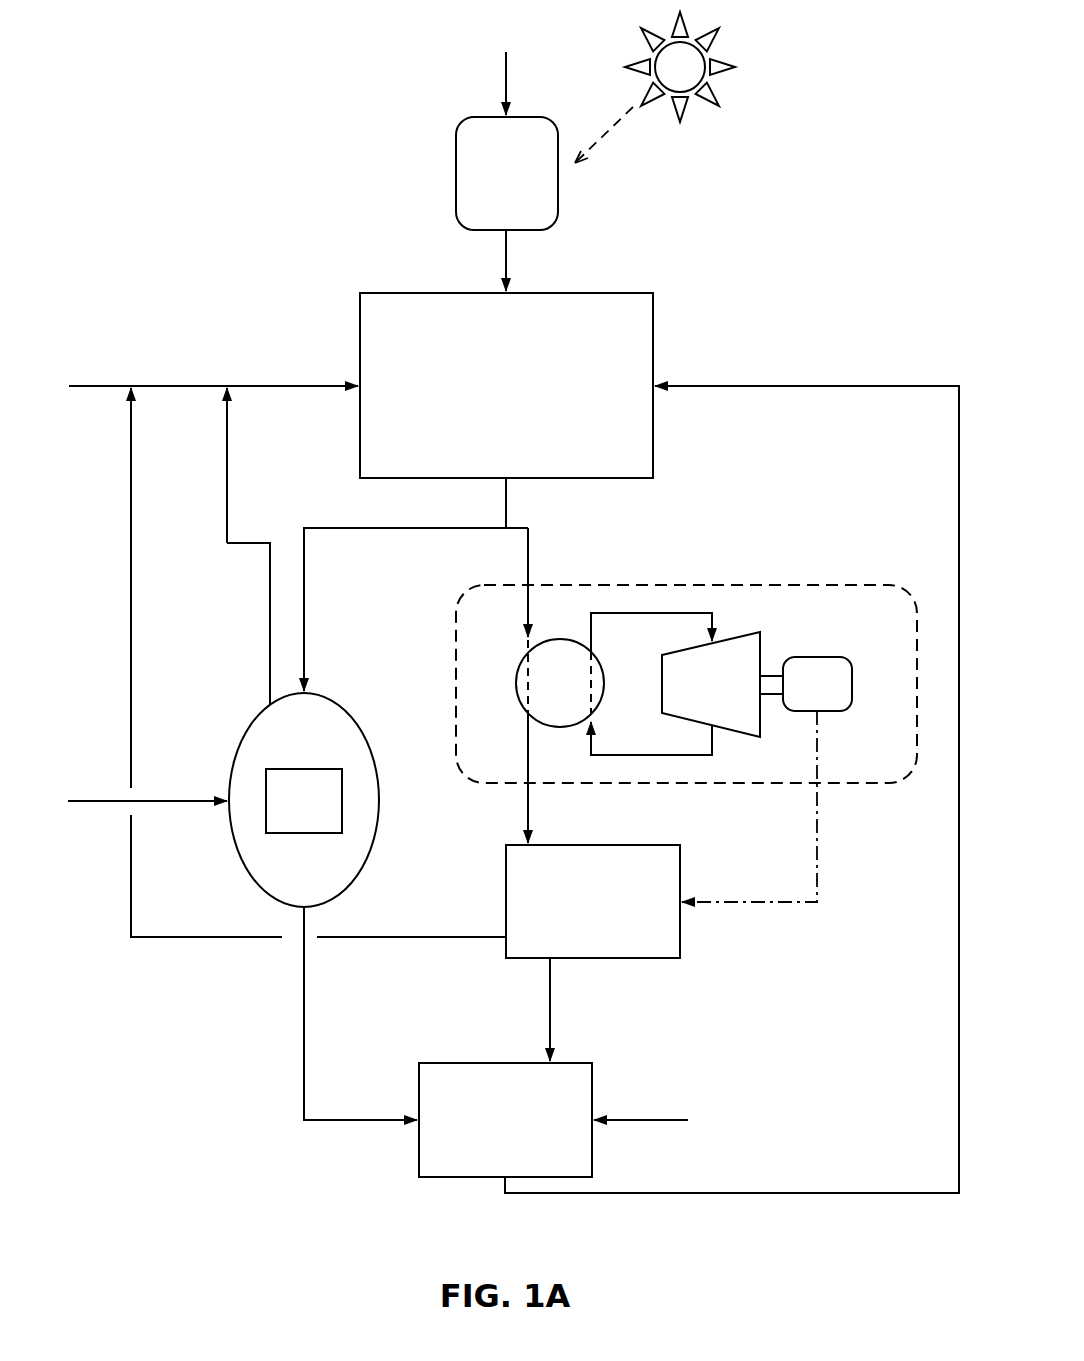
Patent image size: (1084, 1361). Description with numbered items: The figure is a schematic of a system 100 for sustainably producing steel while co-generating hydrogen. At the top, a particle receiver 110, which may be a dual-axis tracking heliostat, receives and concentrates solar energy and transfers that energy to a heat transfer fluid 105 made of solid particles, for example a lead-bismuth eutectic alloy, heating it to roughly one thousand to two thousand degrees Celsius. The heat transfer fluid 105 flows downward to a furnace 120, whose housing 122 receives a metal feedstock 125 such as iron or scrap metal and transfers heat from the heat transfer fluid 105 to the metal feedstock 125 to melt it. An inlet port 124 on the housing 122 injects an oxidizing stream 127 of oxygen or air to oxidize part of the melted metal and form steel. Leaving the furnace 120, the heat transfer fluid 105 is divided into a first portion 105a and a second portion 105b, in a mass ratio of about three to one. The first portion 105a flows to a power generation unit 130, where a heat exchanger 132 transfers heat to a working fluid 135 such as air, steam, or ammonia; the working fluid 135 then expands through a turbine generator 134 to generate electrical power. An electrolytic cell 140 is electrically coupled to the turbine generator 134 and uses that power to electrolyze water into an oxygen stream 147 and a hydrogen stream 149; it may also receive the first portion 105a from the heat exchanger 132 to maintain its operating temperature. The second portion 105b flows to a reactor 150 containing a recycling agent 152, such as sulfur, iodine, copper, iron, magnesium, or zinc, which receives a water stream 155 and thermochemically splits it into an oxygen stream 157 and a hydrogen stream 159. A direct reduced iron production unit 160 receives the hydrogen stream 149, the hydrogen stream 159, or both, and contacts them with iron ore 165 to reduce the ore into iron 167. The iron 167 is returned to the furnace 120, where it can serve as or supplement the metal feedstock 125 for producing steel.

The system 100 is at (486, 1254).
The heat transfer fluid 105 is at (506, 88).
The first portion of the heat transfer fluid 105a is at (528, 575).
The second portion of the heat transfer fluid 105b is at (412, 528).
The particle receiver 110 is at (488, 188).
The furnace 120 is at (378, 268).
The housing 122 is at (544, 370).
The inlet port 124 is at (355, 375).
The metal feedstock 125 is at (488, 399).
The oxidizing stream 127 is at (318, 388).
The power generation unit 130 is at (686, 684).
The heat exchanger 132 is at (541, 696).
The turbine generator 134 is at (701, 695).
The working fluid 135 is at (618, 755).
The electrolytic cell 140 is at (574, 915).
The oxygen stream 147 is at (472, 937).
The hydrogen stream 149 is at (549, 1035).
The reactor 150 is at (271, 786).
The recycling agent 152 is at (285, 813).
The water stream 155 is at (107, 800).
The oxygen stream 157 is at (270, 645).
The hydrogen stream 159 is at (392, 1120).
The direct reduced iron production unit 160 is at (486, 1133).
The iron ore 165 is at (670, 1120).
The iron 167 is at (875, 1193).